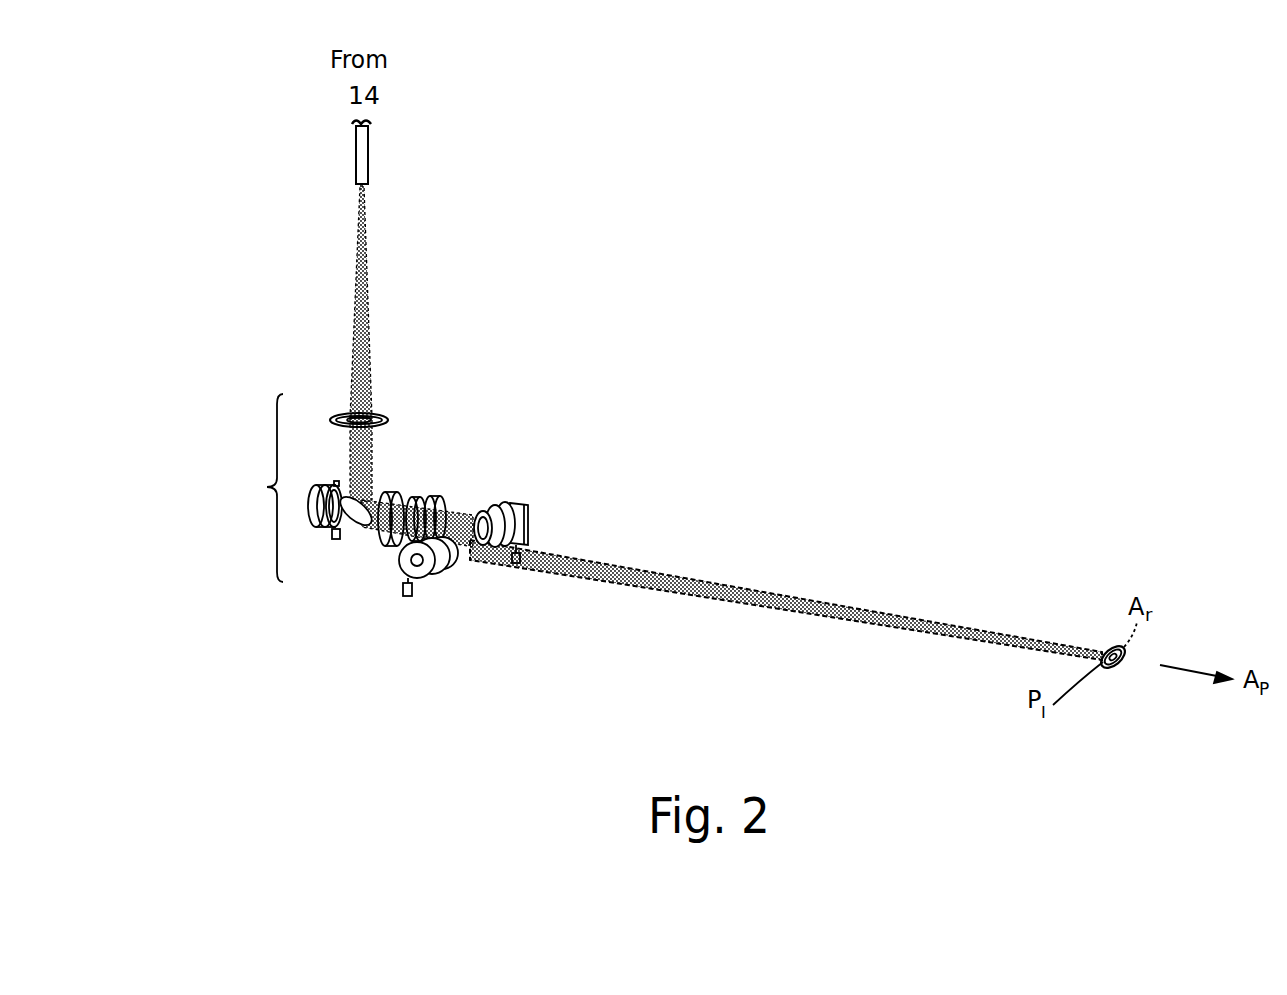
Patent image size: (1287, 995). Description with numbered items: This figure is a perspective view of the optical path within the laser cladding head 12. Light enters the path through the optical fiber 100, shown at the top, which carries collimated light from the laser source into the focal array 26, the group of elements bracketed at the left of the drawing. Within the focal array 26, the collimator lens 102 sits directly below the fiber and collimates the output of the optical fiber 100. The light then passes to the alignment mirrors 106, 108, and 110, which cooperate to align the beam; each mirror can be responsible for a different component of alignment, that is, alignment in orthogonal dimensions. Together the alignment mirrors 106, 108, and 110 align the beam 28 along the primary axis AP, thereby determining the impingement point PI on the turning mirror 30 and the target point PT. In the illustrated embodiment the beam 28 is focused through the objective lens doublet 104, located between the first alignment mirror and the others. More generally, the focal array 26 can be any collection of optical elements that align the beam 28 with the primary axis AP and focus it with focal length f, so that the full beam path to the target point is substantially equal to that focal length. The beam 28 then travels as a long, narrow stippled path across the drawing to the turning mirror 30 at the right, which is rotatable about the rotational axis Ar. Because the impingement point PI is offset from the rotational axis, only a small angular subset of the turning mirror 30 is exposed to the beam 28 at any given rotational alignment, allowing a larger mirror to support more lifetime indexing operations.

The laser cladding head 12 is at (688, 362).
The focal array 26 is at (256, 488).
The beam 28 is at (715, 584).
The turning mirror 30 is at (1119, 670).
The optical fiber 100 is at (369, 147).
The collimator lens 102 is at (375, 411).
The objective lens doublet 104 is at (458, 494).
The alignment mirror 106 is at (335, 540).
The alignment mirror 108 is at (520, 501).
The alignment mirror 110 is at (440, 573).